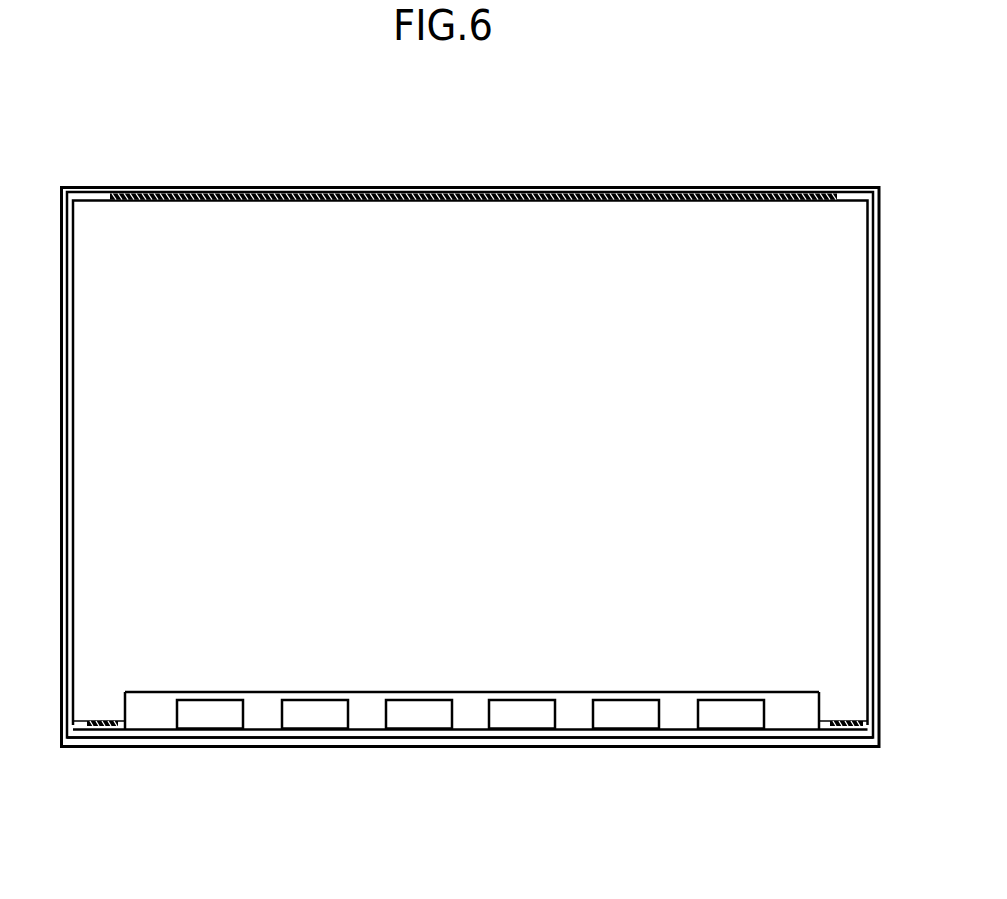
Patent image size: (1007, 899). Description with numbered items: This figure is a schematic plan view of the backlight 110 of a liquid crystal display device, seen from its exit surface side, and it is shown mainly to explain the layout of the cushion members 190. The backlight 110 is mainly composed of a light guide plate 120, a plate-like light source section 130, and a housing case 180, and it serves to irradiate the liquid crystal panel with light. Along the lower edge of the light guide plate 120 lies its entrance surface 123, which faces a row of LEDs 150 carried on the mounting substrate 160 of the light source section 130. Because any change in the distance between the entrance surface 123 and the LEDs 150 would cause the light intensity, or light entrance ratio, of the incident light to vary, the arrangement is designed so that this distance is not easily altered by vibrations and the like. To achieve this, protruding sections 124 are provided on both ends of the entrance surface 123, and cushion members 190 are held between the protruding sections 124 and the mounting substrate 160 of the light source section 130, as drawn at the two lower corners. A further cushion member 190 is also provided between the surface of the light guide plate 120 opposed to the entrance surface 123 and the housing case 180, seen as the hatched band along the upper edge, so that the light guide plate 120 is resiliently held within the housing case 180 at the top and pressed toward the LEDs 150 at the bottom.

The backlight 110 is at (445, 182).
The light guide plate 120 is at (228, 237).
The entrance surface 123 is at (372, 693).
The protruding sections 124 is at (112, 711).
The light source section 130 is at (255, 735).
The LEDs 150 is at (522, 720).
The mounting substrate 160 is at (645, 735).
The housing case 180 is at (745, 188).
The cushion members 190 is at (630, 192).